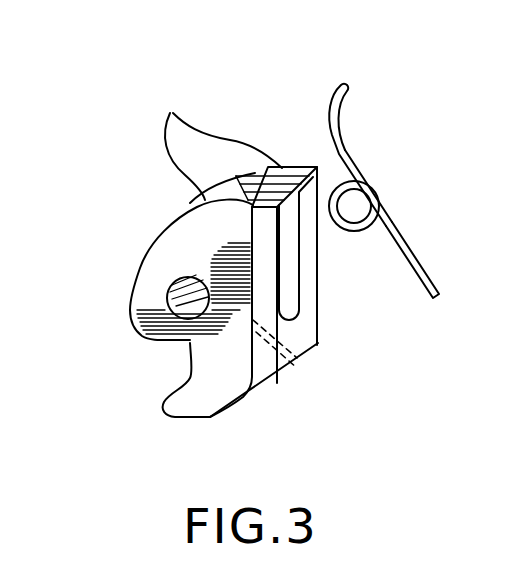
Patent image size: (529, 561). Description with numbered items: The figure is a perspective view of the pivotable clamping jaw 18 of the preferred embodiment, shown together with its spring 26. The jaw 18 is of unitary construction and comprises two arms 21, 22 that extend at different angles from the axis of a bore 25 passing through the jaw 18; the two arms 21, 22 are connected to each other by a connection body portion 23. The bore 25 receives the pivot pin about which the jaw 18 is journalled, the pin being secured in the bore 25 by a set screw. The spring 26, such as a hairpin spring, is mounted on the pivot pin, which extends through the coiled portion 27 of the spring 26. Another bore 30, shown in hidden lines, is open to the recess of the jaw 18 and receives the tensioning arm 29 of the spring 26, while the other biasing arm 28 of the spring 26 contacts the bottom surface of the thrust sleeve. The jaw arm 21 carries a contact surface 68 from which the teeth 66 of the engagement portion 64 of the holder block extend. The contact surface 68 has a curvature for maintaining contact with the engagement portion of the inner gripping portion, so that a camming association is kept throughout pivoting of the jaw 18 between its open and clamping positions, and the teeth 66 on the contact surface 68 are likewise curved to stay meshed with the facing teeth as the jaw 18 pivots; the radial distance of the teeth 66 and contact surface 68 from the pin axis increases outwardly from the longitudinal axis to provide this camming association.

The pivotable clamping jaw 18 is at (320, 345).
The jaw arm 21 is at (193, 227).
The jaw arm 22 is at (205, 413).
The connection body portion 23 is at (133, 318).
The bore 25 is at (184, 306).
The spring 26 is at (391, 182).
The coiled portion 27 is at (363, 232).
The biasing arm 28 is at (331, 113).
The tensioning arm 29 is at (408, 246).
The bore 30 is at (292, 366).
The engagement portion 64 is at (280, 165).
The teeth 66 is at (217, 140).
The contact surface 68 is at (231, 197).